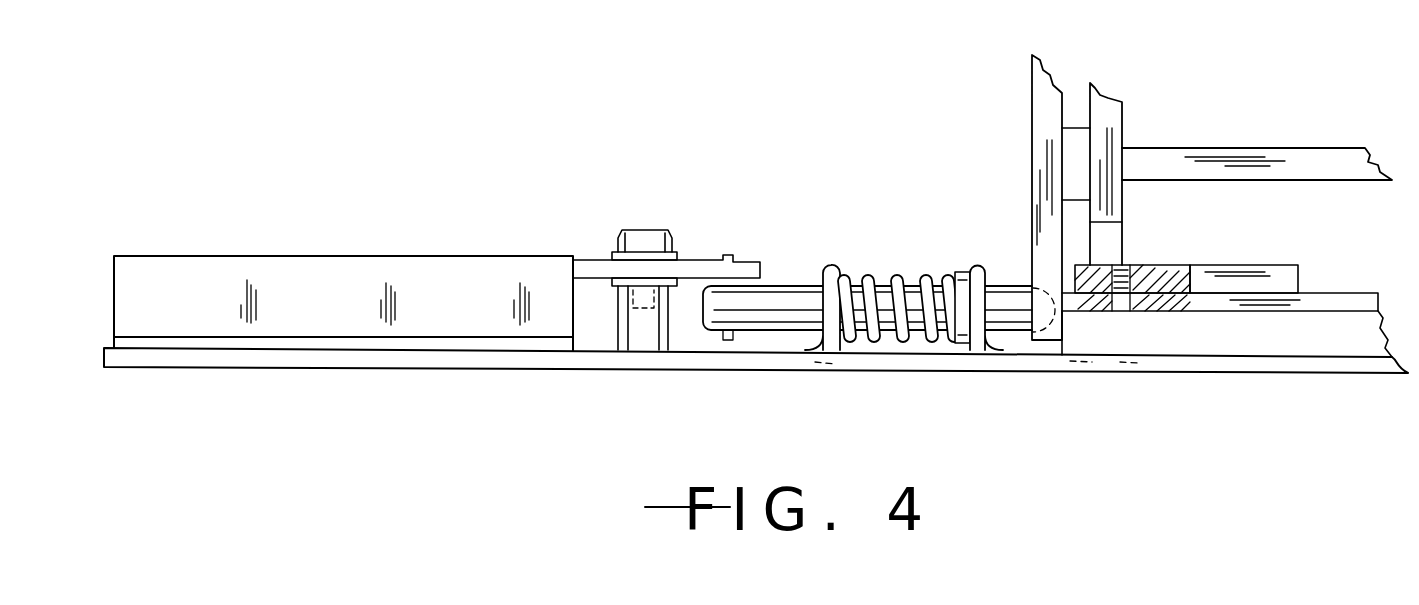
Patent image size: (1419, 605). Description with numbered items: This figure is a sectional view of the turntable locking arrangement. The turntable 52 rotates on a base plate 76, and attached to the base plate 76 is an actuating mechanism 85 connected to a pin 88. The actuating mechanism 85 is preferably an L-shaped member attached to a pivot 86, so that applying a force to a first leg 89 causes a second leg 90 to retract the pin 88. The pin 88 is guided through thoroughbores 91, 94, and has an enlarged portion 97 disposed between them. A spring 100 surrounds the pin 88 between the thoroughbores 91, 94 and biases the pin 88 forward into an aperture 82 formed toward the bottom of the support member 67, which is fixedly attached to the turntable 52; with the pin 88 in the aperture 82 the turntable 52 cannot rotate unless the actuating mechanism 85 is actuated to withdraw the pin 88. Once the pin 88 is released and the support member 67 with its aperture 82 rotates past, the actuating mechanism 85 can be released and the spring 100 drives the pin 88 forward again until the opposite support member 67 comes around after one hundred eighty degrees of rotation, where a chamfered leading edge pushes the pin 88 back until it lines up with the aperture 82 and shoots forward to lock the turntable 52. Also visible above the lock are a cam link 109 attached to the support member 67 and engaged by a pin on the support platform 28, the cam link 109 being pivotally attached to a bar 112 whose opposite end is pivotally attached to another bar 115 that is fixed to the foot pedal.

The actuating mechanism 85 is at (343, 209).
The first leg 89 is at (440, 268).
The pivot 86 is at (643, 212).
The second leg 90 is at (695, 275).
The pin 88 is at (785, 290).
The thoroughbore 91 is at (812, 310).
The spring 100 is at (893, 337).
The enlarged portion 97 is at (960, 272).
The thoroughbore 94 is at (1006, 308).
The aperture 82 is at (1019, 270).
The bar 112 is at (1073, 142).
The support member 67 is at (1043, 197).
The bar 115 is at (1108, 112).
The support platform 28 is at (1240, 148).
The cam link 109 is at (1107, 250).
The turntable 52 is at (1338, 300).
The base plate 76 is at (1193, 370).